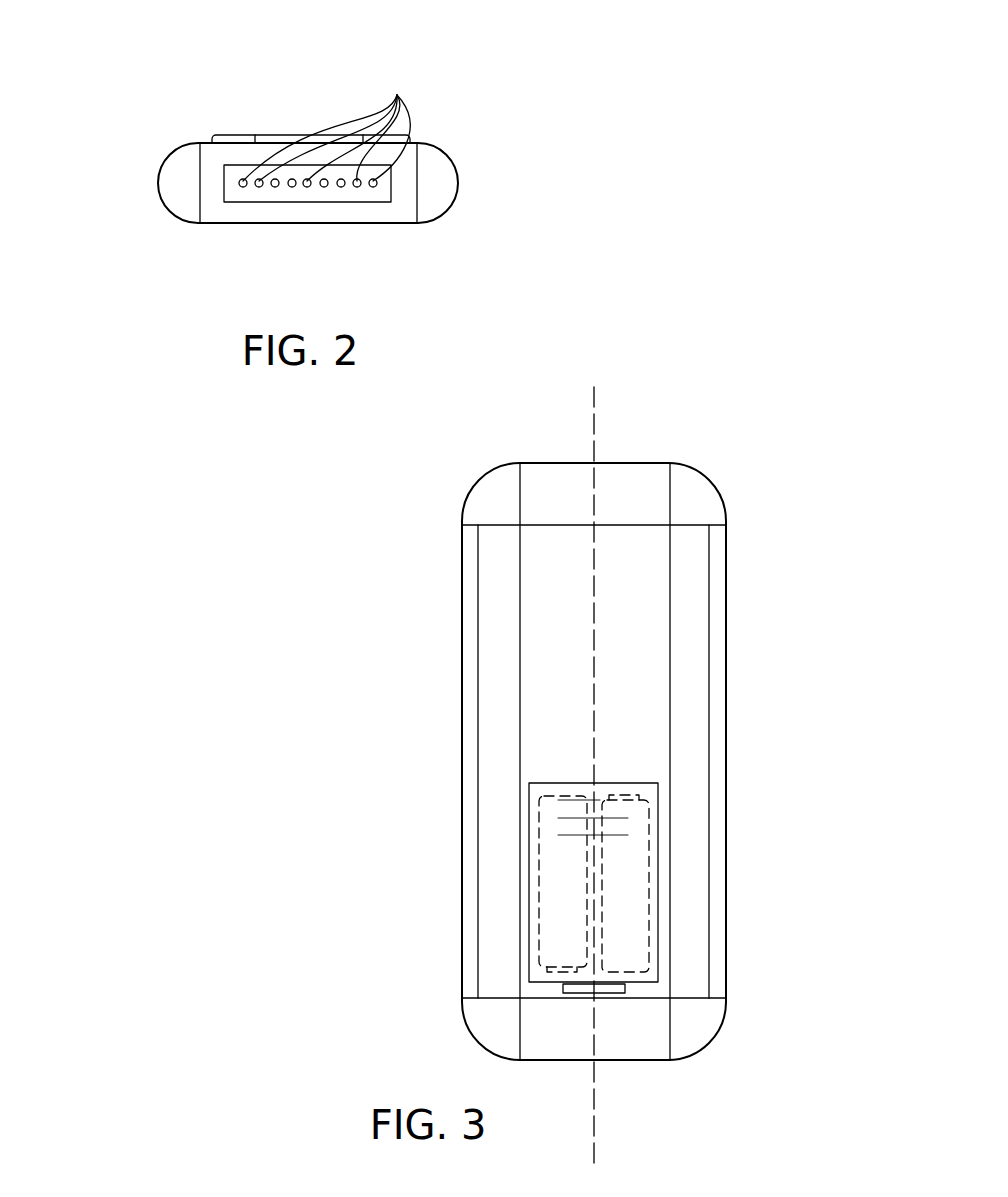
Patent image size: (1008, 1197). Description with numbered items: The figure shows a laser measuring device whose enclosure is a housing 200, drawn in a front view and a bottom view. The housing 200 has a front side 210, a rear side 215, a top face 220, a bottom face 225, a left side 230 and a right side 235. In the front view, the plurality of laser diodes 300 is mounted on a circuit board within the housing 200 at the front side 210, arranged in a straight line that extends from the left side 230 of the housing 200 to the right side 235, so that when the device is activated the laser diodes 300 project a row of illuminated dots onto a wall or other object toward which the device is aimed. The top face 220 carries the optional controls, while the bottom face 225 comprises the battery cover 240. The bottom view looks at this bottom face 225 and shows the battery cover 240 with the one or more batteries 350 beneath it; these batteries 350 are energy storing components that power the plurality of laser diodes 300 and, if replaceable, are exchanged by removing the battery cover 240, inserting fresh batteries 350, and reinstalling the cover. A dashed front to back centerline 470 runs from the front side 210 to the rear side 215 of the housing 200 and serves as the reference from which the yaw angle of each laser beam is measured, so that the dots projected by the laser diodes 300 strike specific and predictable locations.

In FIG. 2, the housing 200 is at (453, 160).
In FIG. 3, the housing 200 is at (707, 480).
In FIG. 3, the front side 210 is at (592, 378).
In FIG. 3, the rear side 215 is at (533, 1077).
In FIG. 2, the top face 220 is at (309, 108).
In FIG. 2, the bottom face 225 is at (297, 230).
In FIG. 2, the left side 230 is at (467, 193).
In FIG. 3, the left side 230 is at (737, 769).
In FIG. 2, the right side 235 is at (145, 184).
In FIG. 3, the right side 235 is at (433, 783).
In FIG. 3, the battery cover 240 is at (658, 953).
In FIG. 2, the plurality of laser diodes 300 is at (331, 124).
In FIG. 3, the one or more batteries 350 is at (620, 943).
In FIG. 3, the front to back centerline 470 is at (594, 443).